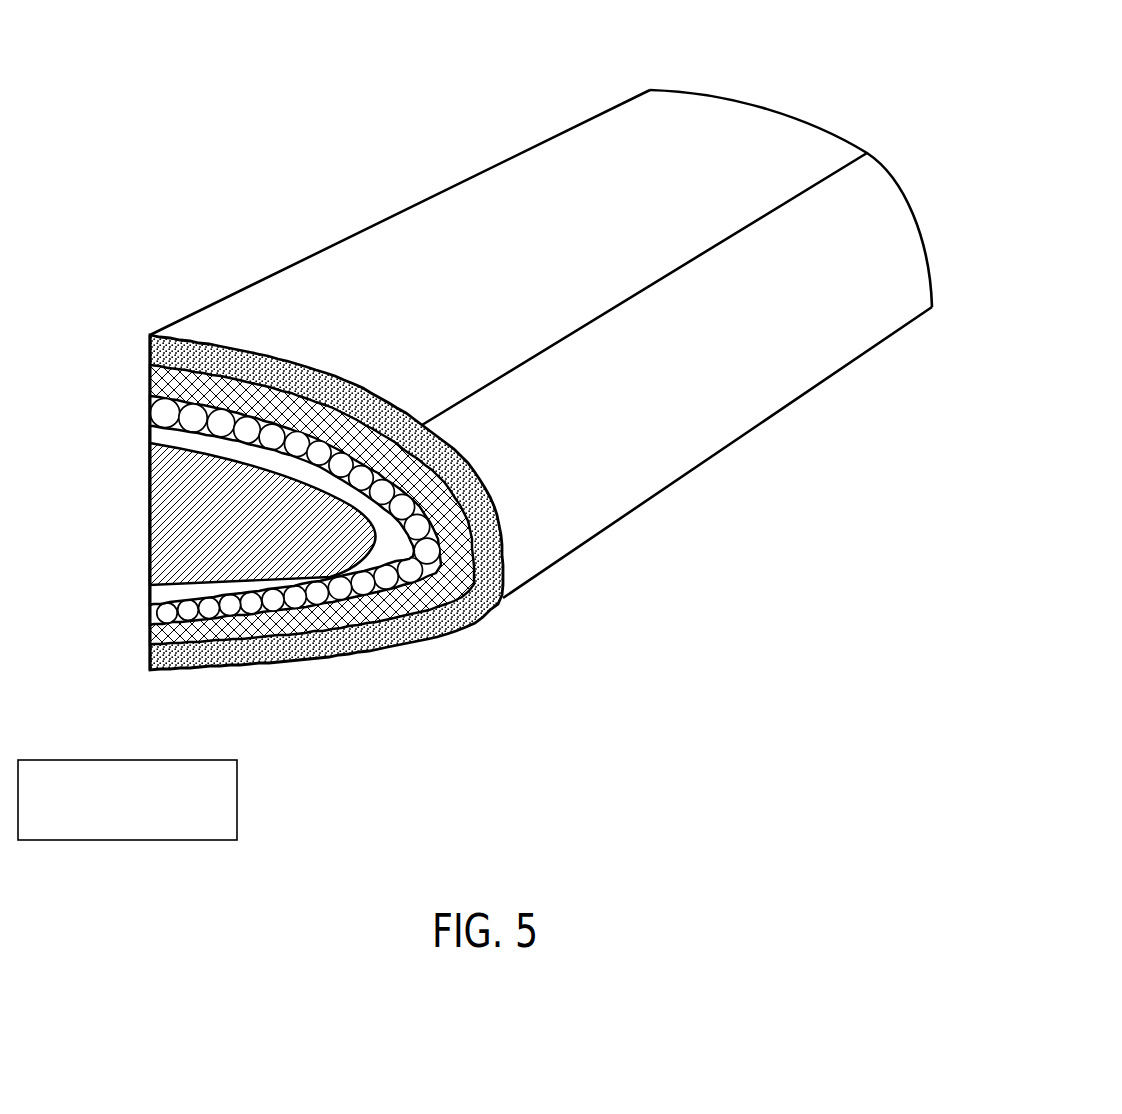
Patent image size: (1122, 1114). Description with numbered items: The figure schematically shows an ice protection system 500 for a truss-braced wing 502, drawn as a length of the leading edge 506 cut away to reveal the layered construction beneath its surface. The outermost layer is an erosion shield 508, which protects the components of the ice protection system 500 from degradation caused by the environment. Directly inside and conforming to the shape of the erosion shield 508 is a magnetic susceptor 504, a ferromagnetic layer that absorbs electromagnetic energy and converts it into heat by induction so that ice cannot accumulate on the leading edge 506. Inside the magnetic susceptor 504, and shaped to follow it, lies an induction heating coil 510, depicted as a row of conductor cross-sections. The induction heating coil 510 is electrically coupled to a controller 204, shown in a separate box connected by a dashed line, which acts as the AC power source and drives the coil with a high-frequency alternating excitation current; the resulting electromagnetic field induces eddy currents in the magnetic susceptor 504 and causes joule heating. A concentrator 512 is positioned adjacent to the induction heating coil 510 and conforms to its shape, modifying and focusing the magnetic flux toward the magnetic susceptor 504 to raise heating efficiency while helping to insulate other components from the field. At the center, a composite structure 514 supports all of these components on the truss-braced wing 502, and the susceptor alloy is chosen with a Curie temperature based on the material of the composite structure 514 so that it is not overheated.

The ice protection system 500 is at (343, 757).
The truss-braced wing 502 is at (695, 52).
The magnetic susceptor 504 is at (333, 618).
The leading edge 506 is at (703, 377).
The erosion shield 508 is at (463, 608).
The induction heating coil 510 is at (138, 398).
The concentrator 512 is at (150, 428).
The composite structure 514 is at (150, 525).
The controller 204 is at (138, 613).